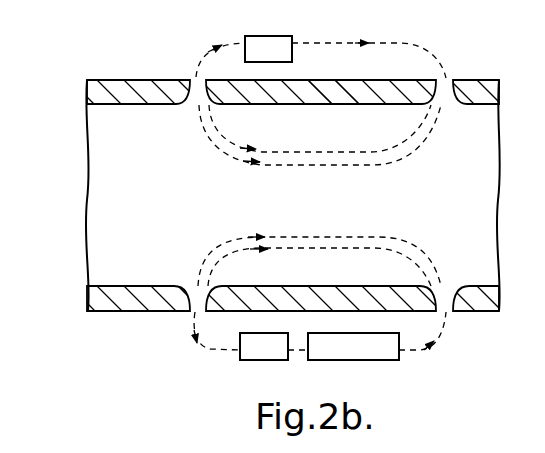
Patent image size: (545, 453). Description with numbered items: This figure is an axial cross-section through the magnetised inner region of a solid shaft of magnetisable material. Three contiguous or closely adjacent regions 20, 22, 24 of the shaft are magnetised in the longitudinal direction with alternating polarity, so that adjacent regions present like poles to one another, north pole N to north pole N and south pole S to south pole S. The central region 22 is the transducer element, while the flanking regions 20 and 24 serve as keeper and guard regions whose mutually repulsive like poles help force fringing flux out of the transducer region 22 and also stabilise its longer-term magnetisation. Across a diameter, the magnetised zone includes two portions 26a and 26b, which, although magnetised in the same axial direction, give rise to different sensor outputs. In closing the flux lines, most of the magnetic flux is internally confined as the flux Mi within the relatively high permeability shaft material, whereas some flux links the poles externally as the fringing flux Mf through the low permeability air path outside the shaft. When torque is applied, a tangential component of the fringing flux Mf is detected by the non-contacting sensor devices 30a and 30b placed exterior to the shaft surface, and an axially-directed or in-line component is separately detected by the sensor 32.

The keeper and guard region 20 is at (139, 80).
The transducer element or region 22 is at (394, 82).
The keeper and guard region 24 is at (485, 80).
The first portion of zone 26a is at (336, 70).
The second portion of zone 26b is at (332, 303).
The non-contacting sensor device 30a is at (268, 38).
The non-contacting sensor device 30b is at (254, 361).
The sensor 32 is at (333, 352).
The north pole N is at (191, 66).
The south pole S is at (451, 70).
The external fringing flux Mf is at (320, 199).
The internally confined magnetic flux Mi is at (325, 236).